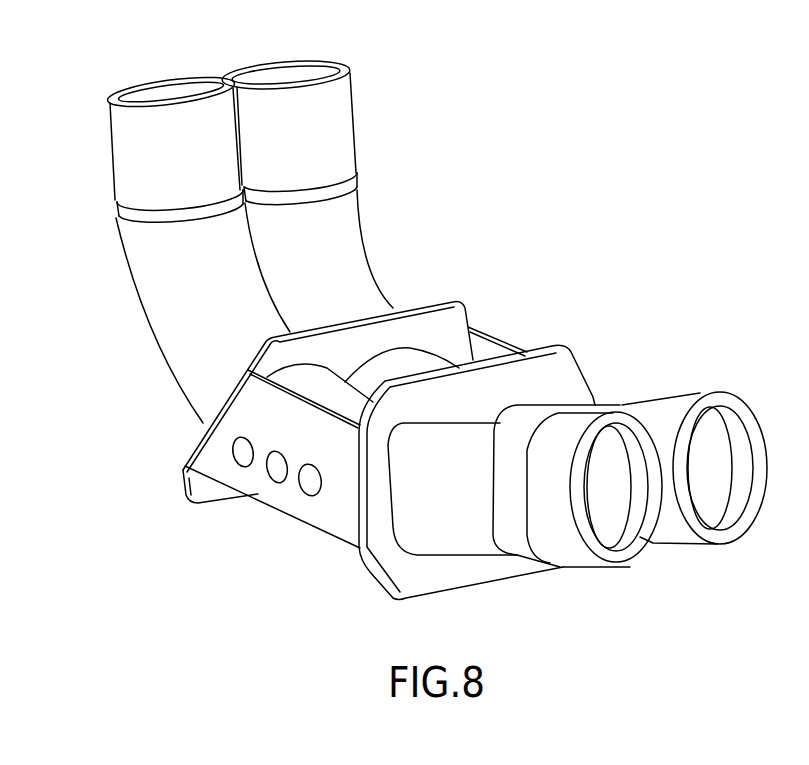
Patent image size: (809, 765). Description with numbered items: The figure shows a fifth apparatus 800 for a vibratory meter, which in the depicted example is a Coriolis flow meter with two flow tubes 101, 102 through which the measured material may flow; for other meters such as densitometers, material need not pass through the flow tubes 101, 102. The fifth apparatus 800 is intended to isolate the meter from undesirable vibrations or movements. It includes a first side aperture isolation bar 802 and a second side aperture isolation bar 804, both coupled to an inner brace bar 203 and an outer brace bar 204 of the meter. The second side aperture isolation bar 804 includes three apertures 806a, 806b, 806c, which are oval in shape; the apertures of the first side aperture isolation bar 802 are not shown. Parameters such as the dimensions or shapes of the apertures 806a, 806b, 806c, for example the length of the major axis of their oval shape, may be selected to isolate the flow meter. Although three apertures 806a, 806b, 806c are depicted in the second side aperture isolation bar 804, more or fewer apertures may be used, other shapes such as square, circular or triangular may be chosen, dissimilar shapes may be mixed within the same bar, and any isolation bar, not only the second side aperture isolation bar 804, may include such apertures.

The flow tube 101 is at (137, 283).
The flow tube 102 is at (360, 221).
The inner brace bar 203 is at (447, 302).
The outer brace bar 204 is at (577, 357).
The fifth apparatus 800 is at (685, 195).
The first side aperture isolation bar 802 is at (487, 327).
The second side aperture isolation bar 804 is at (185, 477).
The aperture 806a is at (241, 467).
The aperture 806b is at (275, 482).
The aperture 806c is at (308, 495).